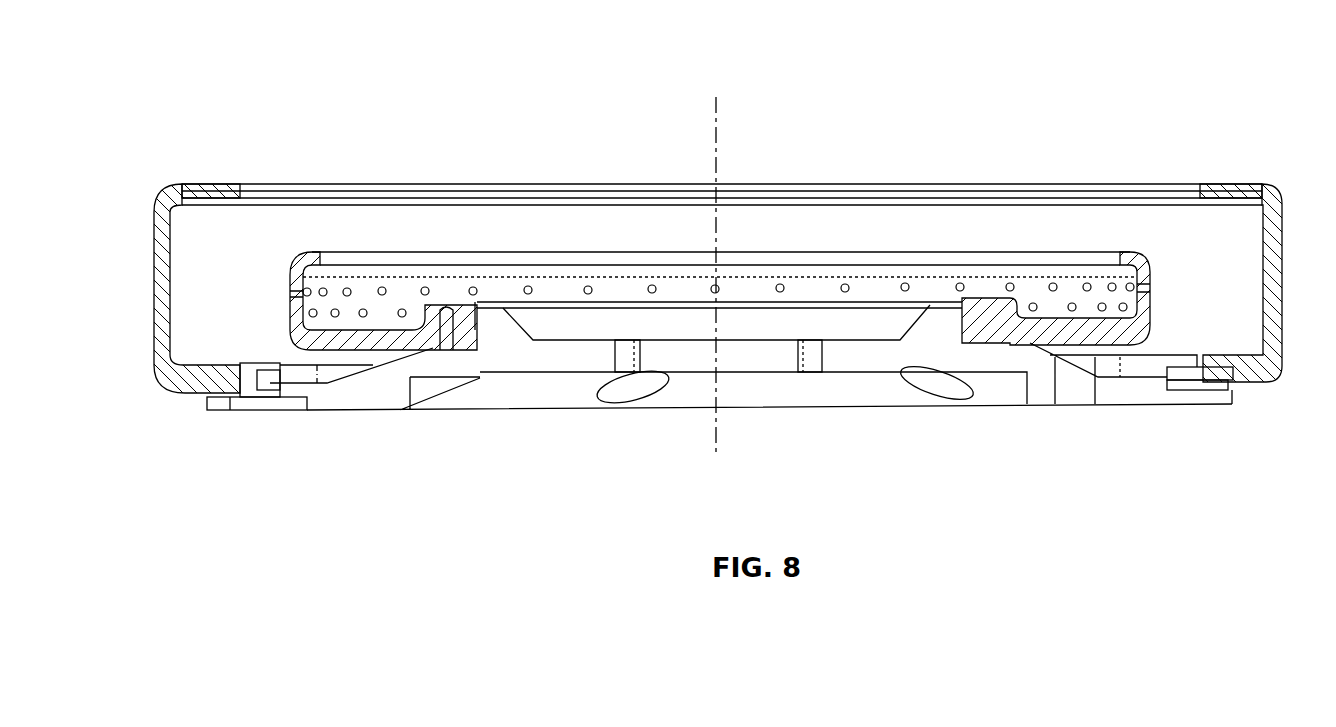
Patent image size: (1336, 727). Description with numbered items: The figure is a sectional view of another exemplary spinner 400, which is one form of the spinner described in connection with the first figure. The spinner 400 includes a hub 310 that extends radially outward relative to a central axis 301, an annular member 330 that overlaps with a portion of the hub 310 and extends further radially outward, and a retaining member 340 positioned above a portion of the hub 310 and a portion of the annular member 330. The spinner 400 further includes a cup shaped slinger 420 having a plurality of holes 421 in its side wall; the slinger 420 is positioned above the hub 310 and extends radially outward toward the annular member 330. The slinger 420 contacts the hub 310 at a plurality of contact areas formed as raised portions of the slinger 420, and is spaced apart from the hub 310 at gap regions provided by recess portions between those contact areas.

The spinner 400 is at (1118, 90).
The annular member 330 is at (1252, 182).
The cup shaped slinger 420 is at (1143, 257).
The holes 421 is at (324, 289).
The central axis 301 is at (717, 126).
The hub 310 is at (1150, 402).
The retaining member 340 is at (1177, 360).